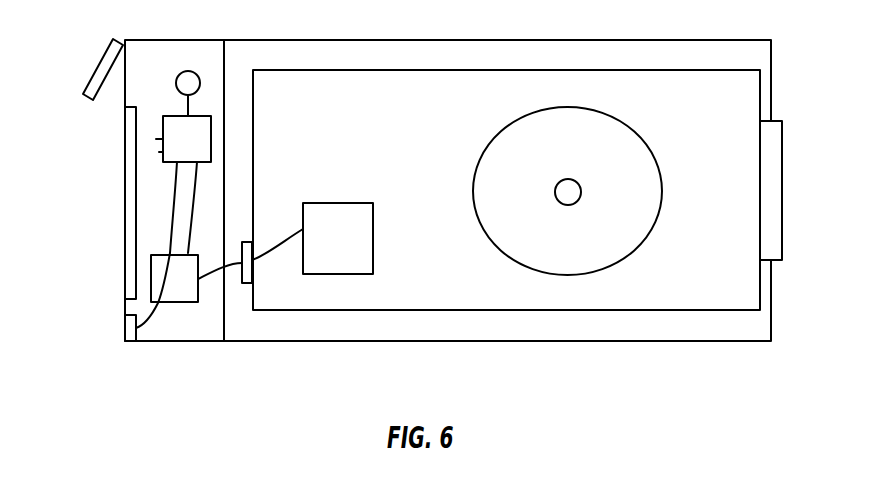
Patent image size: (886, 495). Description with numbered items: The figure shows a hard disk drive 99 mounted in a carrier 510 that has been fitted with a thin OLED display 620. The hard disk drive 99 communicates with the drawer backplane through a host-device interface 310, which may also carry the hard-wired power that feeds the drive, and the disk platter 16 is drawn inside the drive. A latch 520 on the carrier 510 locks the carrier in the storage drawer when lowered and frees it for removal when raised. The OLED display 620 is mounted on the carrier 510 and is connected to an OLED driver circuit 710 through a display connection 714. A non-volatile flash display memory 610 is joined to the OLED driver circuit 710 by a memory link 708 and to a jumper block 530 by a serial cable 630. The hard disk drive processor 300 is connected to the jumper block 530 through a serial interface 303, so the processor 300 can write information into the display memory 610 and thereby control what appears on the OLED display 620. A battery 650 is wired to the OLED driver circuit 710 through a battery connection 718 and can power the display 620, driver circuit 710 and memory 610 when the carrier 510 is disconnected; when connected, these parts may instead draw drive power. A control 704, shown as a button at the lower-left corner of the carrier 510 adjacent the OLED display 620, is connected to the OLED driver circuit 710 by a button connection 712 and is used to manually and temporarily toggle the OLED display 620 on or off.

The carrier 510 is at (207, 38).
The latch 520 is at (98, 65).
The battery 650 is at (200, 83).
The battery connection 718 is at (188, 106).
The display connection 714 is at (163, 139).
The OLED display 620 is at (125, 145).
The OLED driver circuit 710 is at (163, 152).
The button connection 712 is at (173, 188).
The memory link 708 is at (190, 222).
The control 704 is at (133, 327).
The display memory 610 is at (173, 302).
The serial cable 630 is at (233, 263).
The jumper block 530 is at (248, 284).
The RS232/422 interface 303 is at (279, 252).
The hard disk drive processor 300 is at (337, 274).
The hard disk drive 99 is at (466, 70).
The disk 16 is at (567, 107).
The host-device interface 310 is at (783, 190).